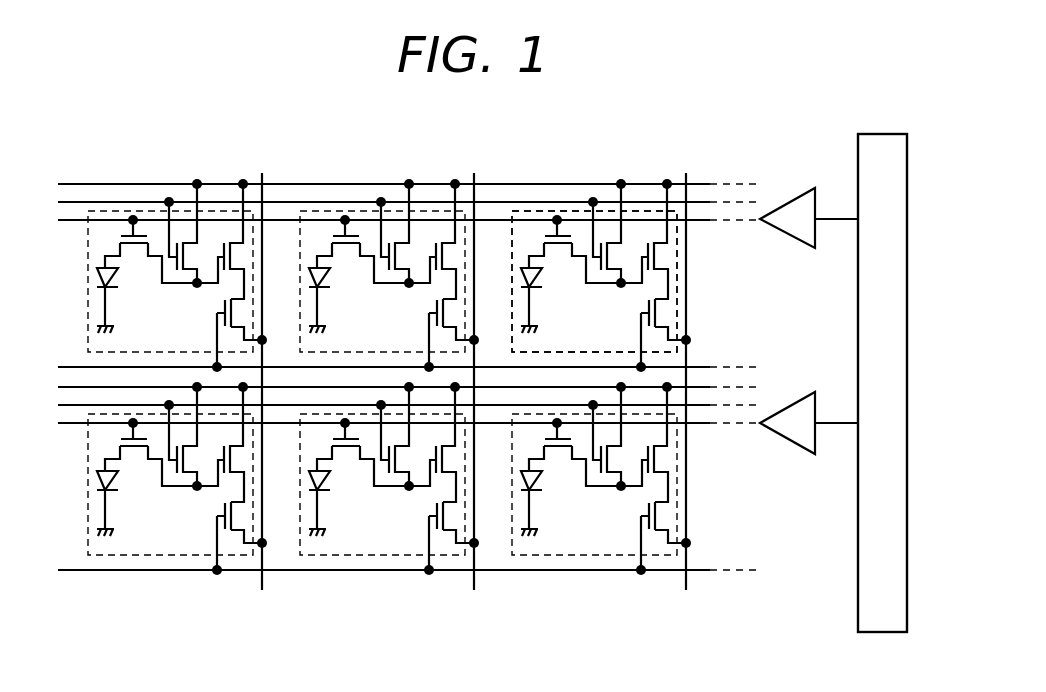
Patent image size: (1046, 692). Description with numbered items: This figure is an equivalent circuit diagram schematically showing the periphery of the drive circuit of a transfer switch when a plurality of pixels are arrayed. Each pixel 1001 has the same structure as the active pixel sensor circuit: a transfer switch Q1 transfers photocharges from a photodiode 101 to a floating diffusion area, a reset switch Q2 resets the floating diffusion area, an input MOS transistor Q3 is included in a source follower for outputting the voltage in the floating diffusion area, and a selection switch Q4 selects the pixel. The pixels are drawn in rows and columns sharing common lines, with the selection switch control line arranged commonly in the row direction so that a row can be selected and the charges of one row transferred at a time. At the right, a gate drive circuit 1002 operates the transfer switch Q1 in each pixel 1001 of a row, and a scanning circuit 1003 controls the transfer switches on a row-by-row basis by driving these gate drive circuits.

The transfer switch Q1 is at (130, 249).
The reset switch Q2 is at (191, 260).
The input MOS transistor Q3 is at (237, 245).
The selection switch Q4 is at (238, 318).
The photodiode 101 is at (112, 283).
The pixel 1001 is at (543, 211).
The gate drive circuit 1002 is at (817, 190).
The scanning circuit 1003 is at (883, 133).